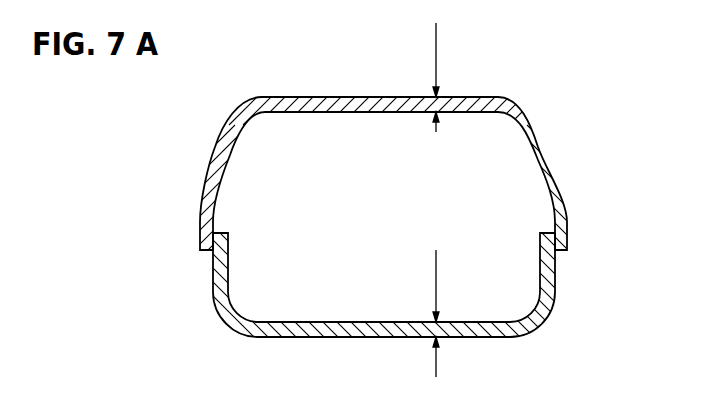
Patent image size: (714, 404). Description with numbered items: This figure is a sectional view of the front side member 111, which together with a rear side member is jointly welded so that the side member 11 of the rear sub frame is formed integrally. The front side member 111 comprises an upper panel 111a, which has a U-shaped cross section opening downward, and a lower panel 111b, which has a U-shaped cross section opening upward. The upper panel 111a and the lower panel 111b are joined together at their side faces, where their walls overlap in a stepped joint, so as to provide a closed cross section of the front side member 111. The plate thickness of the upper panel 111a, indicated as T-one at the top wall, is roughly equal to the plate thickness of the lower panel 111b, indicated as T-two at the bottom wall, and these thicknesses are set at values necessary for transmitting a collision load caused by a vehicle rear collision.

The side member 11 is at (254, 63).
The front side member 111 is at (217, 150).
The upper panel 111a is at (557, 170).
The lower panel 111b is at (556, 282).